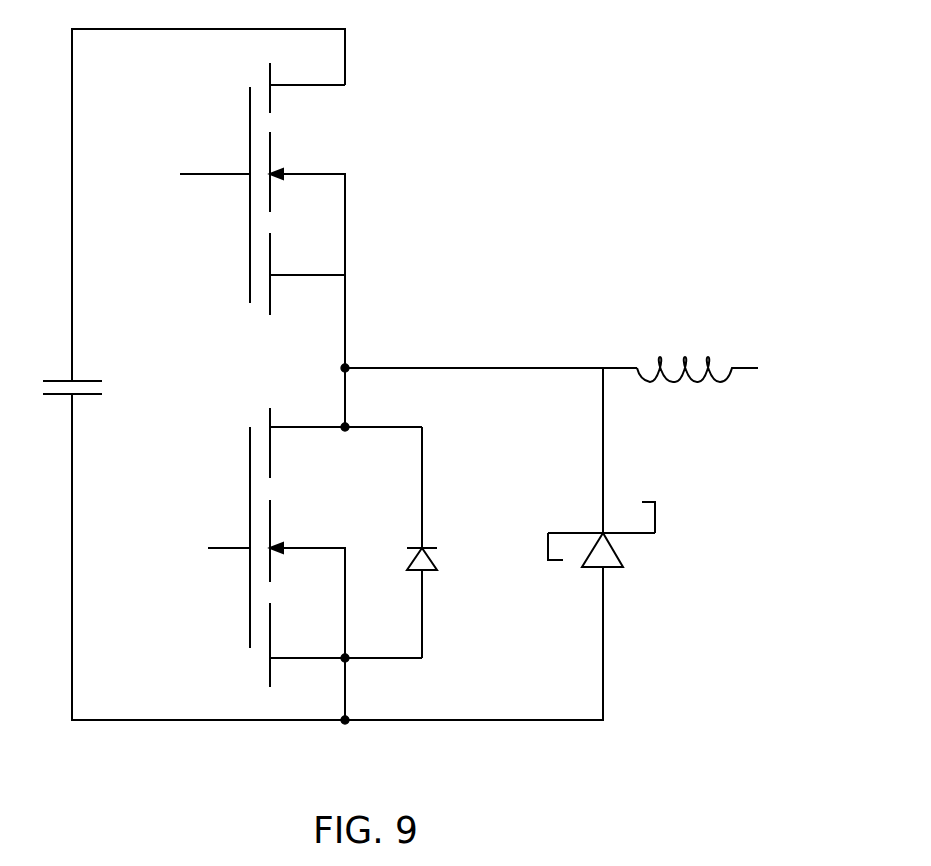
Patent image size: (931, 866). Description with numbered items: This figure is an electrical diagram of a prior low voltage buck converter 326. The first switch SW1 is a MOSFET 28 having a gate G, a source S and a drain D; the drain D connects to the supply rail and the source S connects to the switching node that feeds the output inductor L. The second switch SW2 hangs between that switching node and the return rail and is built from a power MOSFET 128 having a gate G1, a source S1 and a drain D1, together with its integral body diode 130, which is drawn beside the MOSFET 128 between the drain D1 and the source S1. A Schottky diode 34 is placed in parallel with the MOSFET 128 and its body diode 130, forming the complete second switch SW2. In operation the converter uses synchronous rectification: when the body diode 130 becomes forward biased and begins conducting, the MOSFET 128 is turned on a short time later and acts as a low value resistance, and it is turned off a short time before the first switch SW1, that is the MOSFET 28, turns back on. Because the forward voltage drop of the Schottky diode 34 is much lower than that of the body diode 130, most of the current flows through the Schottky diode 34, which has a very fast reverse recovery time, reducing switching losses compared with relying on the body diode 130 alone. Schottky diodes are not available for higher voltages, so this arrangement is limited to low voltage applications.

The MOSFET 28 is at (239, 150).
The first switch SW1 is at (362, 176).
The drain D is at (336, 74).
The gate G is at (188, 188).
The source S is at (304, 284).
The low voltage buck converter 326 is at (548, 310).
The inductor L is at (695, 341).
The Schottky diode 34 is at (638, 566).
The second switch SW2 is at (441, 674).
The power MOSFET 128 is at (215, 404).
The drain D1 is at (322, 410).
The gate G1 is at (206, 547).
The source S1 is at (333, 706).
The integral body diode 130 is at (441, 542).